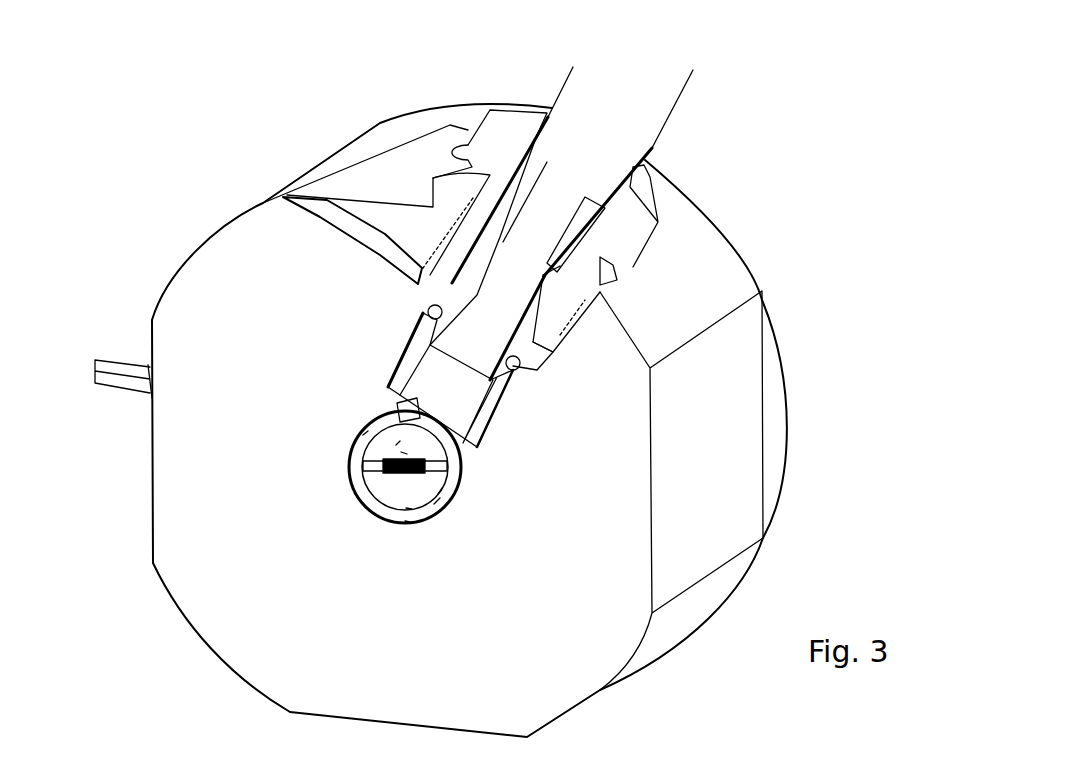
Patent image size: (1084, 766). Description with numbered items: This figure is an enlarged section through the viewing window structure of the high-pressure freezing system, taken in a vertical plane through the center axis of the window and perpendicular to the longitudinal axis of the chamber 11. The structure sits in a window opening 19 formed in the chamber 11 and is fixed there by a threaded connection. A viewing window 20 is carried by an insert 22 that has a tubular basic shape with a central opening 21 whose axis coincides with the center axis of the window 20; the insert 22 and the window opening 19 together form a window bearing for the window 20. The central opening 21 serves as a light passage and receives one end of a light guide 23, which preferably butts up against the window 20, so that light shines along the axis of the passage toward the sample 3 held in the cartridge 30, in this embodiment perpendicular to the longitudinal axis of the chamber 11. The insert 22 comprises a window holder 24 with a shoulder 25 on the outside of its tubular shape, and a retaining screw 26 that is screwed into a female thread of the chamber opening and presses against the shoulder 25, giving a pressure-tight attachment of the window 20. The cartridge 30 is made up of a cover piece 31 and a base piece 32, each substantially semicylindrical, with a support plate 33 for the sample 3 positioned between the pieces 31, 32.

The sample 3 is at (412, 478).
The chamber 11 is at (556, 627).
The window opening 19 is at (567, 369).
The viewing window 20 is at (430, 380).
The central opening 21 is at (546, 275).
The insert 22 is at (640, 167).
The light guide 23 is at (577, 155).
The window holder 24 is at (432, 210).
The shoulder 25 is at (415, 257).
The retaining screw 26 is at (436, 185).
The cartridge 30 is at (321, 467).
The cover piece 31 is at (402, 445).
The base piece 32 is at (343, 467).
The support plate 33 is at (373, 466).